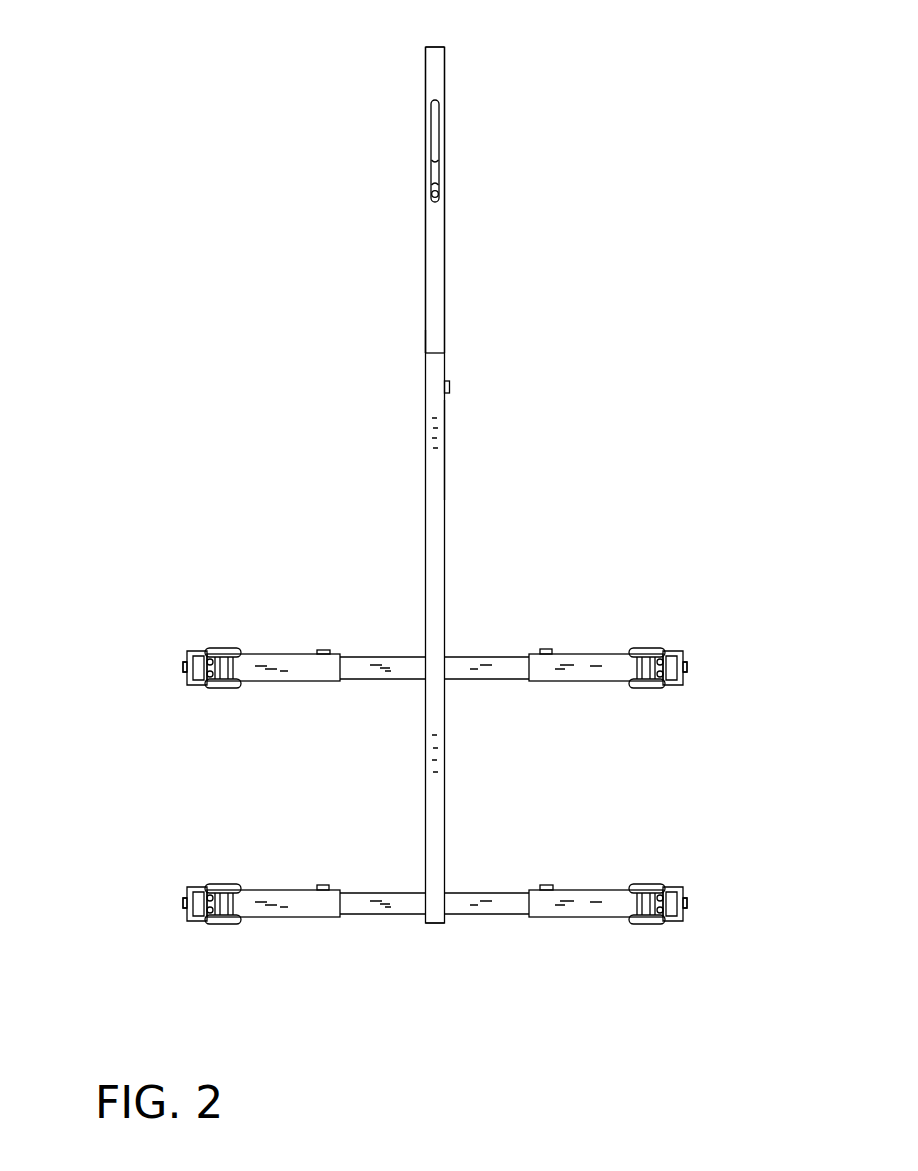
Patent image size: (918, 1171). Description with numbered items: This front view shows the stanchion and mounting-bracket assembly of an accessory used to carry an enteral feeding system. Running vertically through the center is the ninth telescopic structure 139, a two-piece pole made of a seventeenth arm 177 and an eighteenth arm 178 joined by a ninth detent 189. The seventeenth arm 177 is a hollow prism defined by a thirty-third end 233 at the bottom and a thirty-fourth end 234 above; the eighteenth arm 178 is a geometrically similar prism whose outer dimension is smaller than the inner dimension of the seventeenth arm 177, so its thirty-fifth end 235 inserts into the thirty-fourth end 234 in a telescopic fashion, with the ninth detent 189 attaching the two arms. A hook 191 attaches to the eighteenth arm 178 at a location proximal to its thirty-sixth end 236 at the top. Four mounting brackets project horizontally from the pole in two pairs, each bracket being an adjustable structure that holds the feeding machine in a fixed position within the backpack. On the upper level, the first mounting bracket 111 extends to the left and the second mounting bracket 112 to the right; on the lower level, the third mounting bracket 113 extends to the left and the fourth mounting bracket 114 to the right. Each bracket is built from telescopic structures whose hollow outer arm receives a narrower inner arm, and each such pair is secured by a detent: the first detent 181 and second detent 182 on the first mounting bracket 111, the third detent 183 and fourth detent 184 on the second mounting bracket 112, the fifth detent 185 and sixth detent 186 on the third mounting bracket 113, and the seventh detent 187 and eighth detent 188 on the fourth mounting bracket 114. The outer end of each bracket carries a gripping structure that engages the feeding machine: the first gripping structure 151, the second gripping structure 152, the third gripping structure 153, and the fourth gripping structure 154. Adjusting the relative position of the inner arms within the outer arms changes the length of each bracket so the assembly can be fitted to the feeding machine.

The first mounting bracket 111 is at (272, 654).
The second mounting bracket 112 is at (567, 635).
The third mounting bracket 113 is at (277, 890).
The fourth mounting bracket 114 is at (561, 875).
The ninth telescopic structure 139 is at (445, 448).
The first gripping structure 151 is at (215, 648).
The second gripping structure 152 is at (707, 580).
The third gripping structure 153 is at (216, 882).
The fourth gripping structure 154 is at (646, 882).
The seventeenth arm 177 is at (445, 515).
The eighteenth arm 178 is at (441, 228).
The first detent 181 is at (183, 667).
The second detent 182 is at (322, 650).
The third detent 183 is at (552, 648).
The fourth detent 184 is at (688, 668).
The fifth detent 185 is at (176, 903).
The sixth detent 186 is at (324, 885).
The seventh detent 187 is at (546, 884).
The eighth detent 188 is at (688, 903).
The ninth detent 189 is at (450, 390).
The hook 191 is at (436, 137).
The thirty-third end 233 is at (436, 924).
The thirty-fourth end 234 is at (430, 353).
The thirty-fifth end 235 is at (426, 350).
The thirty-sixth end 236 is at (434, 47).